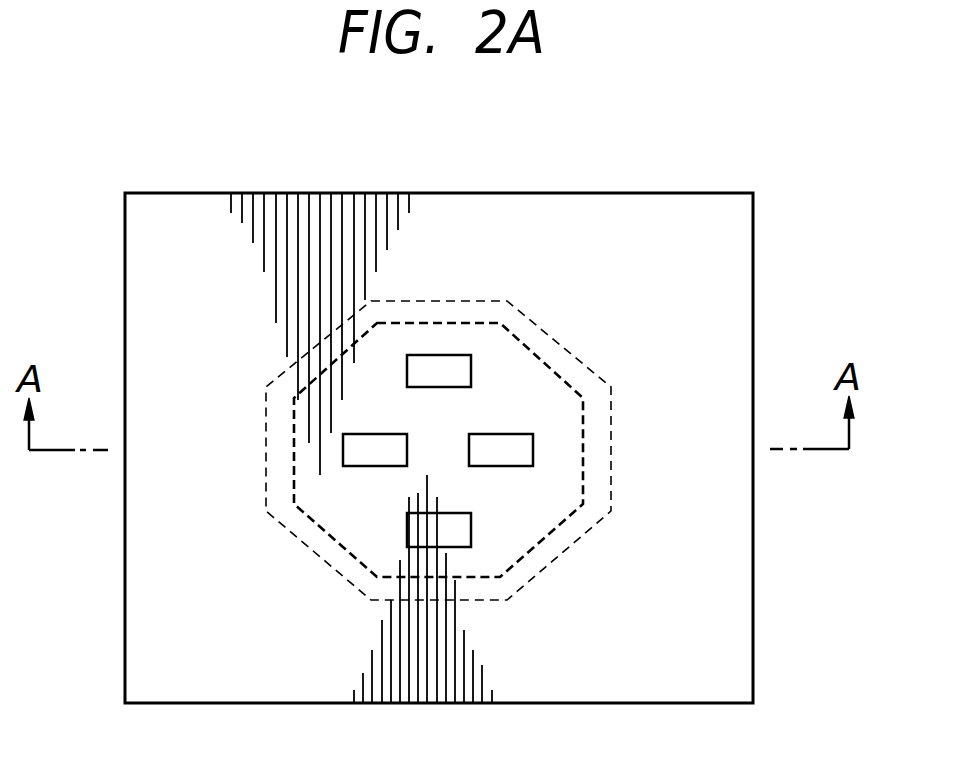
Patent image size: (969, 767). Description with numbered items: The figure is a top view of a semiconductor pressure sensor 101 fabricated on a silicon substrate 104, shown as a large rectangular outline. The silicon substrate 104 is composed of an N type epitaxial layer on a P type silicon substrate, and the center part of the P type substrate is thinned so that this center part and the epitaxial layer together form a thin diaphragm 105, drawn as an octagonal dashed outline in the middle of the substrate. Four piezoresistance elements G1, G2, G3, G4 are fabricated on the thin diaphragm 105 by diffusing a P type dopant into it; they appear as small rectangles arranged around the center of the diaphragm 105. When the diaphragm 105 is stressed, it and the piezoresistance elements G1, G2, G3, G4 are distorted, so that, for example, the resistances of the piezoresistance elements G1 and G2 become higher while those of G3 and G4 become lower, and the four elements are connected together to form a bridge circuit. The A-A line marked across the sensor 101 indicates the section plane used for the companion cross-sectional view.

The semiconductor pressure sensor 101 is at (470, 170).
The silicon substrate 104 is at (753, 638).
The thin diaphragm 105 is at (549, 530).
The piezoresistance element G1 is at (471, 534).
The piezoresistance element G2 is at (471, 366).
The piezoresistance element G3 is at (343, 446).
The piezoresistance element G4 is at (533, 444).